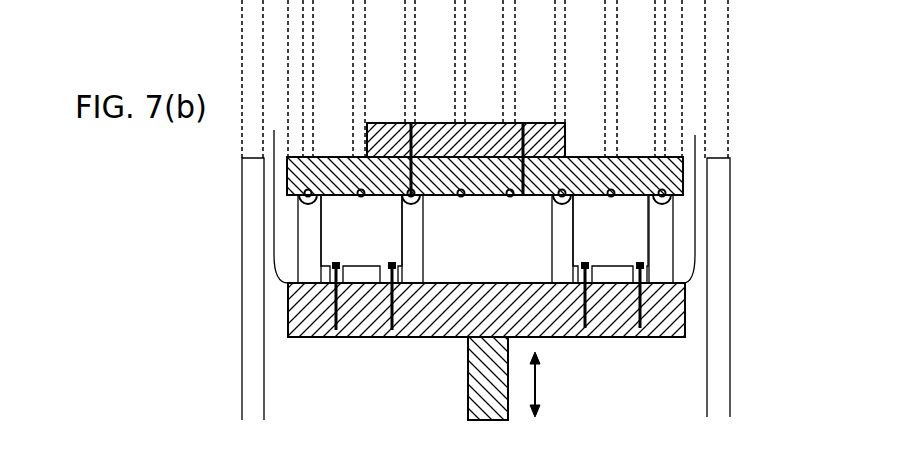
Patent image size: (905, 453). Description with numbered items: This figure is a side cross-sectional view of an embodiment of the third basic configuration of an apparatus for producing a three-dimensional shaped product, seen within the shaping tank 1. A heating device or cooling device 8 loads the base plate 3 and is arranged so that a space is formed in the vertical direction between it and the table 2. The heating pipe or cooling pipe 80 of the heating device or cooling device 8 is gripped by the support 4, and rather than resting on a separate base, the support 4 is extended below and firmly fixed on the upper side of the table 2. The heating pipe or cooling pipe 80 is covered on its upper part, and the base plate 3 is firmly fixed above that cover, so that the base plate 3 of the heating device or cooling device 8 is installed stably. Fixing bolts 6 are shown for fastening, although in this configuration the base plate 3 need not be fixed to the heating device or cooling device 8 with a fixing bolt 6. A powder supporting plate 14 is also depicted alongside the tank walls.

The shaping tank 1 is at (255, 265).
The table 2 is at (383, 320).
The base plate 3 is at (553, 122).
The support 4 is at (310, 253).
The fixing bolt 6 is at (412, 123).
The heating device or cooling device 8 is at (683, 193).
The powder supporting plate 14 is at (480, 194).
The heating pipe or cooling pipe 80 is at (308, 188).